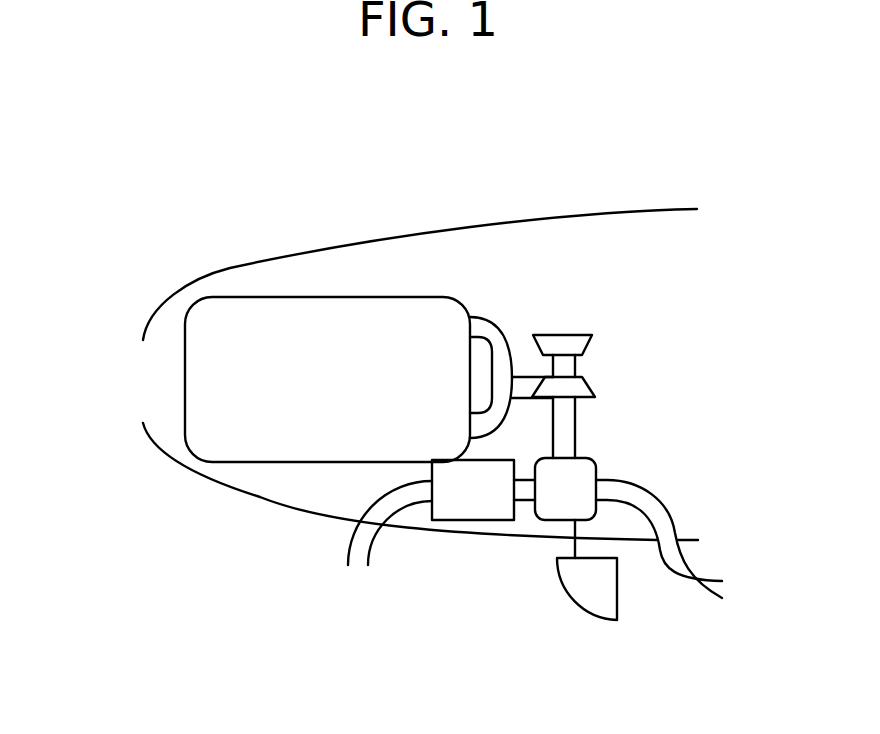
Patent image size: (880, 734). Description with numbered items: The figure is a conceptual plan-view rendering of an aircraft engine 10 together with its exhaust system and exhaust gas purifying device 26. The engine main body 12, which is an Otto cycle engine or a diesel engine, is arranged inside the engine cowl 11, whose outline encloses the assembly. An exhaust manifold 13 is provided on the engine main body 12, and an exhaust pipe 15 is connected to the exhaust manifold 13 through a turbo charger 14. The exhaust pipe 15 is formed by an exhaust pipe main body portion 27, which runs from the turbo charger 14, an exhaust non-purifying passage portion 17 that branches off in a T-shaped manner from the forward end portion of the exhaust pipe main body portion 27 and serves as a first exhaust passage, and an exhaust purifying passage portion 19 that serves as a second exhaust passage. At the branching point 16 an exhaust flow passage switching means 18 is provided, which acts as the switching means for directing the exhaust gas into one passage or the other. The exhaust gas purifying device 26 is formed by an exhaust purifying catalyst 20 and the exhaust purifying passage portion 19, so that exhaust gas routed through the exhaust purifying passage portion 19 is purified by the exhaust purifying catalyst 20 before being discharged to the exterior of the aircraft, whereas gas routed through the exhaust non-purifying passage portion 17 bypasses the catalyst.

The aircraft engine 10 is at (266, 190).
The engine cowl 11 is at (540, 215).
The engine main body 12 is at (185, 385).
The exhaust manifold 13 is at (492, 316).
The turbo charger 14 is at (592, 350).
The exhaust pipe main body portion 27 is at (575, 423).
The exhaust flow passage switching means 18 is at (597, 458).
The exhaust purifying catalyst 20 is at (458, 522).
The exhaust purifying passage portion 19 is at (350, 547).
The exhaust non-purifying passage portion 17 is at (673, 520).
The branching point 16 is at (542, 534).
The exhaust pipe 15 is at (388, 545).
The exhaust gas purifying device 26 is at (498, 592).